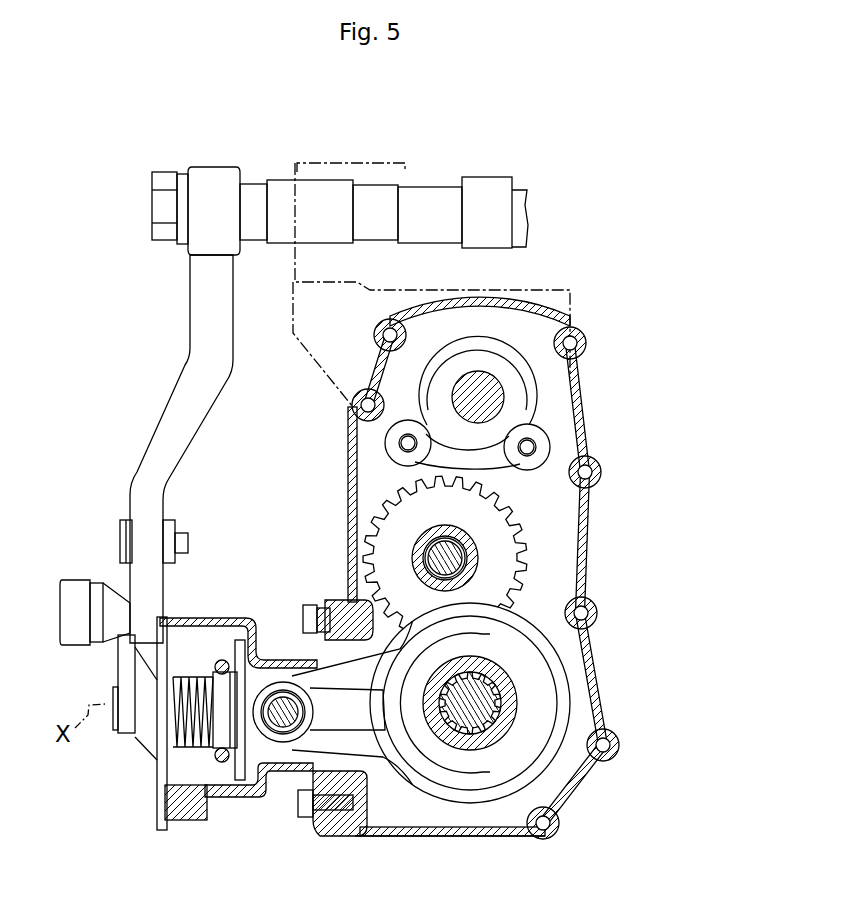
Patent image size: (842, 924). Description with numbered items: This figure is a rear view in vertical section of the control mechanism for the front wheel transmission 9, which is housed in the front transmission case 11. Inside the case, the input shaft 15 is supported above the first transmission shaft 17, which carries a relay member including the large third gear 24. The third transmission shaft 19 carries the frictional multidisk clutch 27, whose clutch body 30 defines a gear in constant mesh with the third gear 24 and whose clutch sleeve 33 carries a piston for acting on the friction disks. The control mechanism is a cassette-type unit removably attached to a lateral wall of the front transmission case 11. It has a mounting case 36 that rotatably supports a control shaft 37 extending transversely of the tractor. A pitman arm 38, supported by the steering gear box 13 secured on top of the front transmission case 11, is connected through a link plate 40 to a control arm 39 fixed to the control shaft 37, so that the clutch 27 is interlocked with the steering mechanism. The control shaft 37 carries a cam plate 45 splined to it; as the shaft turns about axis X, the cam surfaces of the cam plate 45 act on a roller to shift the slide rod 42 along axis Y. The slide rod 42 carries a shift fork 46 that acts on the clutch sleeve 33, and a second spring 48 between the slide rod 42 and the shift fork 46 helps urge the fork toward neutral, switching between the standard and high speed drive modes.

The front wheel transmission 9 is at (496, 841).
The front transmission case 11 is at (348, 445).
The steering gear box 13 is at (357, 162).
The input shaft 15 is at (495, 398).
The first transmission shaft 17 is at (430, 545).
The third transmission shaft 19 is at (492, 710).
The third gear 24 is at (530, 545).
The frictional multidisk clutch 27 is at (580, 673).
The clutch body 30 is at (550, 777).
The clutch sleeve 33 is at (507, 672).
The mounting case 36 is at (243, 618).
The control shaft 37 is at (116, 730).
The pitman arm 38 is at (165, 404).
The control arm 39 is at (118, 666).
The link plate 40 is at (170, 518).
The slide rod 42 is at (283, 756).
The cam plate 45 is at (235, 790).
The shift fork 46 is at (447, 773).
The second spring 48 is at (285, 692).